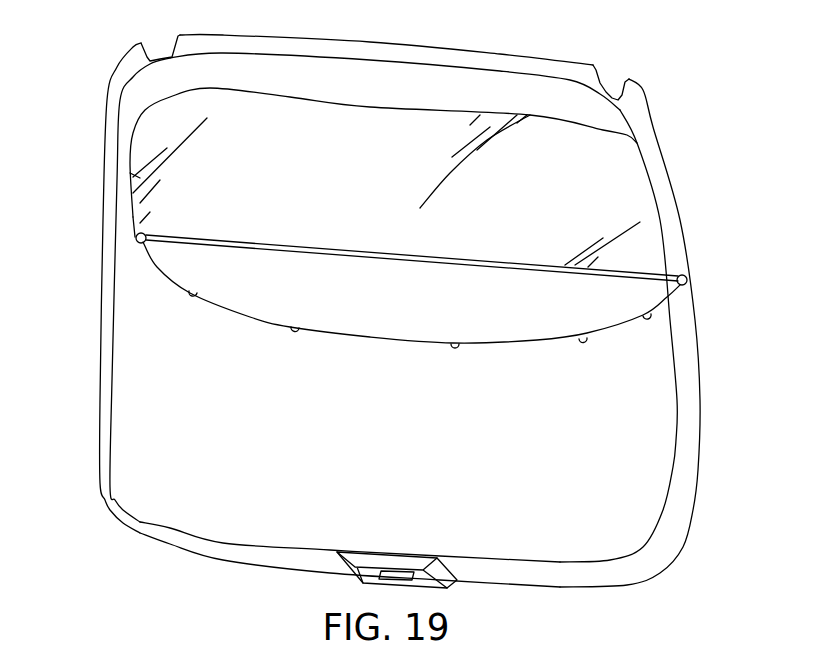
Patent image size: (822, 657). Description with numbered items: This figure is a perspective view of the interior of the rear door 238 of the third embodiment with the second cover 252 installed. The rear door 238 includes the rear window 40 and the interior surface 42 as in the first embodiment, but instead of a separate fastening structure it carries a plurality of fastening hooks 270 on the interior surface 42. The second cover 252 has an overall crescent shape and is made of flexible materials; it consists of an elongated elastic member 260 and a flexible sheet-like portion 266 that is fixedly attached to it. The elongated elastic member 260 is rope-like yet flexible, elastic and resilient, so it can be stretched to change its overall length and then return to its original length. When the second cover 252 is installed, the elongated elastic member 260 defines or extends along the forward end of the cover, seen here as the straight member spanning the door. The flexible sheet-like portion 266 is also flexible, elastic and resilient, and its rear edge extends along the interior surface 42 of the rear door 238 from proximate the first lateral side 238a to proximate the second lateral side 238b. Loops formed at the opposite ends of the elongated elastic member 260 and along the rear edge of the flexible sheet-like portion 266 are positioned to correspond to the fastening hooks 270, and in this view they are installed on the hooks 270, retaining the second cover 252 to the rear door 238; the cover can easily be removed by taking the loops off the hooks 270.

The rear door 238 is at (406, 298).
The first lateral side 238a is at (700, 323).
The second lateral side 238b is at (115, 253).
The rear window 40 is at (310, 148).
The interior surface 42 is at (607, 478).
The second cover 252 is at (411, 238).
The elongated elastic member 260 is at (347, 250).
The flexible sheet-like portion 266 is at (257, 285).
The fastening hooks 270 is at (452, 348).